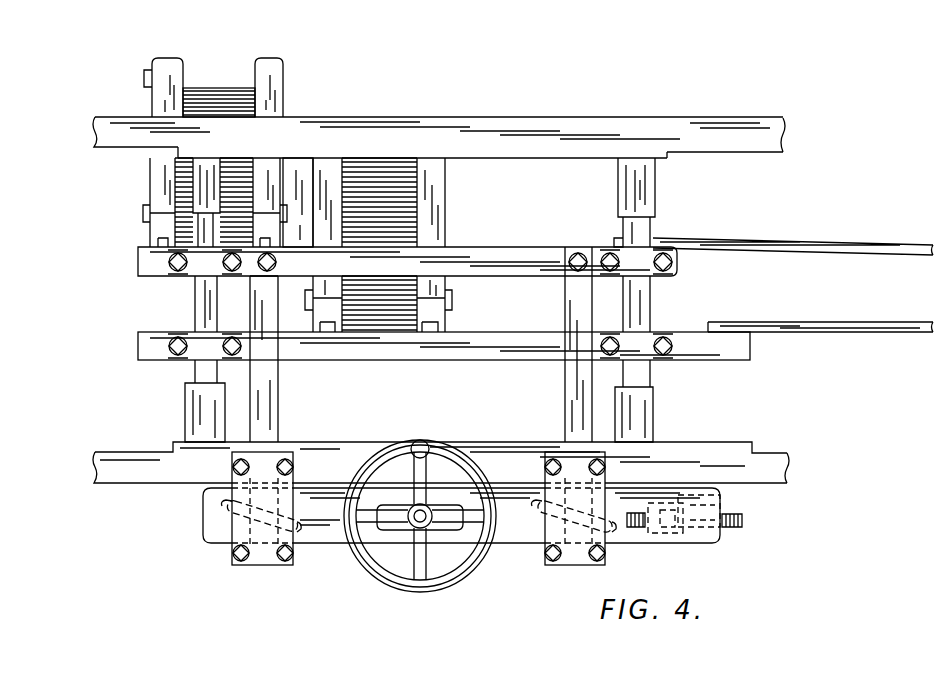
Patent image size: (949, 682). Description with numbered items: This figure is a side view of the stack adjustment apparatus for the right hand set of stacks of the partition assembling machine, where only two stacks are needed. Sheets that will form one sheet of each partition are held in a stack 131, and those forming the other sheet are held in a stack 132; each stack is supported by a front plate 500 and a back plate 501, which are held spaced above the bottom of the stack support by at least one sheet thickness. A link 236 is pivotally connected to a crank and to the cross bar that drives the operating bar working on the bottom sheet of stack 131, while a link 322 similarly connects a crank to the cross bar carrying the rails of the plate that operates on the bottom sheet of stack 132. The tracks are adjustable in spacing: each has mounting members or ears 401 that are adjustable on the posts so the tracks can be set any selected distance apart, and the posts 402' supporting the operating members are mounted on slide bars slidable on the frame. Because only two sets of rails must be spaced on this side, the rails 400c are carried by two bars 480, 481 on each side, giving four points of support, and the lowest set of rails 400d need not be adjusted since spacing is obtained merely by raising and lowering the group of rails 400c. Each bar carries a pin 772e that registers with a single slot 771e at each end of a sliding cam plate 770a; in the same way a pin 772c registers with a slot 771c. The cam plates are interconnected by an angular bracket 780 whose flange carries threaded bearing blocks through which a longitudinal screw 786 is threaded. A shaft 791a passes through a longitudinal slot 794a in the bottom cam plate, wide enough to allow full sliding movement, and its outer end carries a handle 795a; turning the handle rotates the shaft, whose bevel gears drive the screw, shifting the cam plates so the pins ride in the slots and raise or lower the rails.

The back plate 501 is at (163, 58).
The stack 131 is at (216, 83).
The front plate 500 is at (276, 61).
The stack 132 is at (376, 166).
The rails 400c is at (508, 242).
The lowest set of rails 400d is at (485, 345).
The mounting members or ears 401 is at (205, 338).
The post 402' is at (419, 327).
The bar 480 is at (273, 417).
The bar 481 is at (570, 416).
The link 236 is at (826, 232).
The link 322 is at (850, 311).
The pin 772e is at (255, 512).
The slot 771e is at (295, 528).
The sliding cam plate 770a is at (534, 540).
The pin 772c is at (587, 527).
The slot 771c is at (612, 530).
The angular bracket 780 is at (720, 501).
The longitudinal screw 786 is at (742, 521).
The longitudinal slot 794a is at (393, 528).
The shaft 791a is at (427, 523).
The handle 795a is at (440, 428).